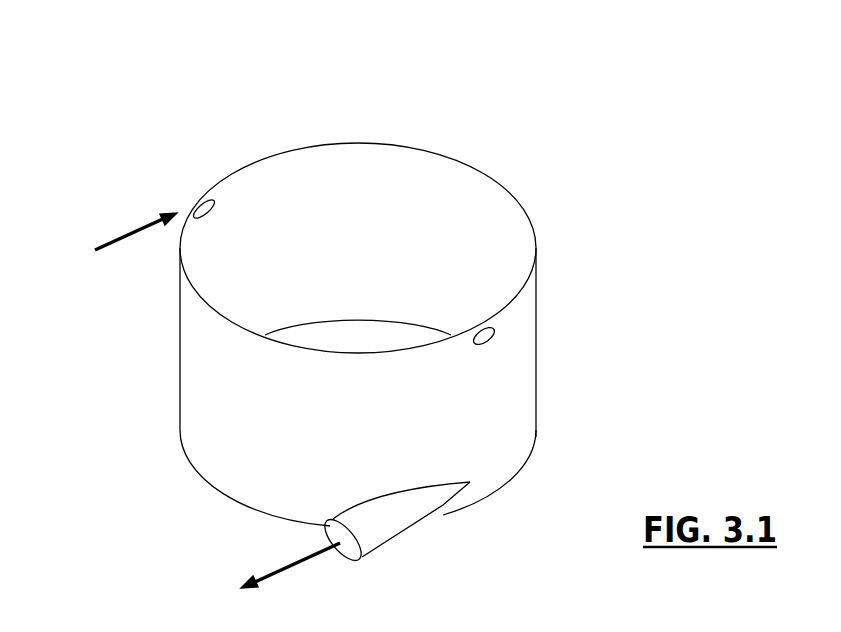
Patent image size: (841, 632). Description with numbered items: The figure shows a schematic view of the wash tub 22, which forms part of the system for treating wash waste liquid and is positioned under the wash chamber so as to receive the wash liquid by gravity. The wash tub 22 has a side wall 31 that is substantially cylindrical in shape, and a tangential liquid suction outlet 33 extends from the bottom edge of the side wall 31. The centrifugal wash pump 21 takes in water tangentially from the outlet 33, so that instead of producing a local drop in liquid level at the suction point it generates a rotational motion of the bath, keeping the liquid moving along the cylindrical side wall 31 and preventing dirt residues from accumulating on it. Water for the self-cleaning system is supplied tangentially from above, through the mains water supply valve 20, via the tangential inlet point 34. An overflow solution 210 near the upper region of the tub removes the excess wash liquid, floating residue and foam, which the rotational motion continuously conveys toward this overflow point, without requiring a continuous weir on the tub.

The wash tub 22 is at (98, 55).
The mains water supply valve 20 is at (113, 249).
The centrifugal wash pump 21 is at (265, 573).
The side wall 31 is at (445, 428).
The tangential liquid suction outlet 33 is at (415, 505).
The tangential inlet point 34 is at (200, 210).
The overflow solution 210 is at (497, 332).